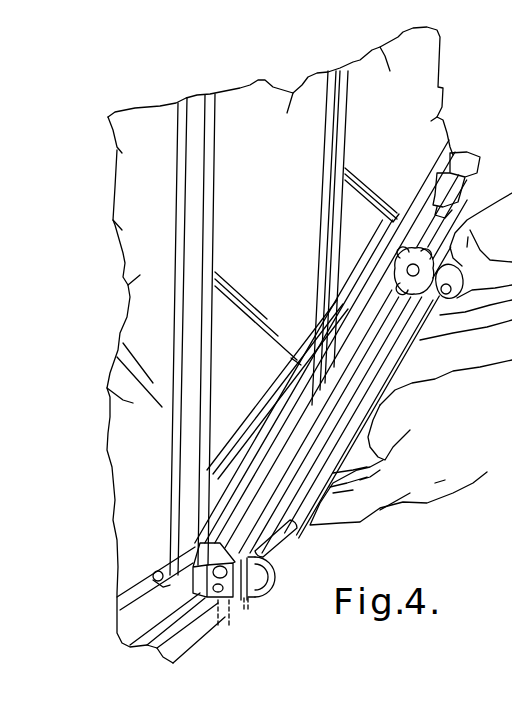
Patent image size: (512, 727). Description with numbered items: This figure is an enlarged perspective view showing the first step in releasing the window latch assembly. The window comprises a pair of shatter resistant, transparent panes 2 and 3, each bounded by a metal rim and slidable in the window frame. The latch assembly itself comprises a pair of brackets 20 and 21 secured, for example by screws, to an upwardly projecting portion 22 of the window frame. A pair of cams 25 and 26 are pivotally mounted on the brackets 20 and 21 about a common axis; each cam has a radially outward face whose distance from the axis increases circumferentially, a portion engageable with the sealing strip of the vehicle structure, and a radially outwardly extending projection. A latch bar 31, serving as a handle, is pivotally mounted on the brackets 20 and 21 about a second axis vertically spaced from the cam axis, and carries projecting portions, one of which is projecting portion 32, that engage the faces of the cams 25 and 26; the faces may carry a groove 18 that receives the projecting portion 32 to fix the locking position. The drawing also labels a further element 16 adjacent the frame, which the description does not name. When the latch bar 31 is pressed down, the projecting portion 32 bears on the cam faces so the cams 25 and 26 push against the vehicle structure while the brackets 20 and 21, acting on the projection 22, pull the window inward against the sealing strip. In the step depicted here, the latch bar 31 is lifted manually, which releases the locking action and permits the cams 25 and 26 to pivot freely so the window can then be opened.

The pane 2 is at (121, 472).
The pane 3 is at (260, 98).
The guide bar 16 is at (328, 212).
The groove 18 is at (273, 570).
The bracket 20 is at (233, 598).
The bracket 21 is at (400, 263).
The upwardly projecting portion 22 is at (178, 618).
The cam 25 is at (264, 598).
The cam 26 is at (452, 272).
The latch bar 31 is at (393, 376).
The projecting portion 32 is at (287, 550).